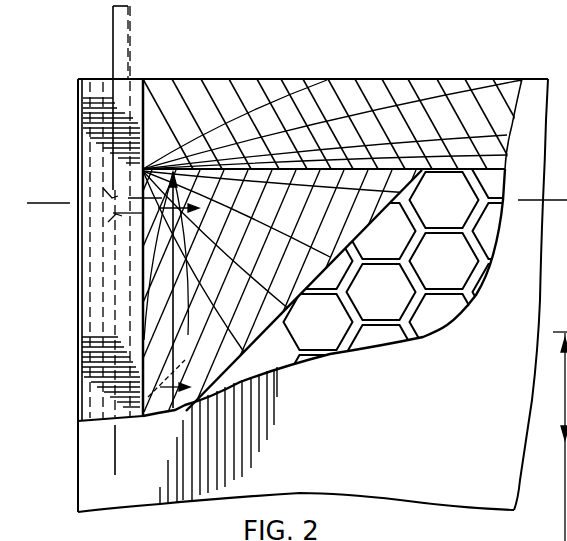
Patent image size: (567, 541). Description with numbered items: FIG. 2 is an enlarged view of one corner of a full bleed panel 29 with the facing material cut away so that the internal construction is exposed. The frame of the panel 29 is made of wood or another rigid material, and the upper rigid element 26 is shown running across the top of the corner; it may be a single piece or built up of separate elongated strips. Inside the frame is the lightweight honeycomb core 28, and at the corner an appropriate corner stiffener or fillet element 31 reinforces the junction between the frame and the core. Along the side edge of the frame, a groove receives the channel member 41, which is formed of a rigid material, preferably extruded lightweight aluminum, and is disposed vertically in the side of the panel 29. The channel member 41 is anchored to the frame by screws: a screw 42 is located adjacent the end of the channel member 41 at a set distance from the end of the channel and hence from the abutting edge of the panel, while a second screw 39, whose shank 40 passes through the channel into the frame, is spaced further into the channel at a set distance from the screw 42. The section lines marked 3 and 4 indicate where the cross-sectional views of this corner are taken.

The rigid frame element 26 is at (326, 80).
The corner stiffener or fillet element 31 is at (385, 112).
The honeycomb core 28 is at (412, 318).
The shank 40 is at (185, 300).
The screw 42 is at (180, 238).
The panel 29 is at (76, 333).
The channel member 41 is at (88, 258).
The screw 39 is at (80, 384).
The section line 4- 4 is at (108, 47).
The section line 3- 3 is at (38, 196).